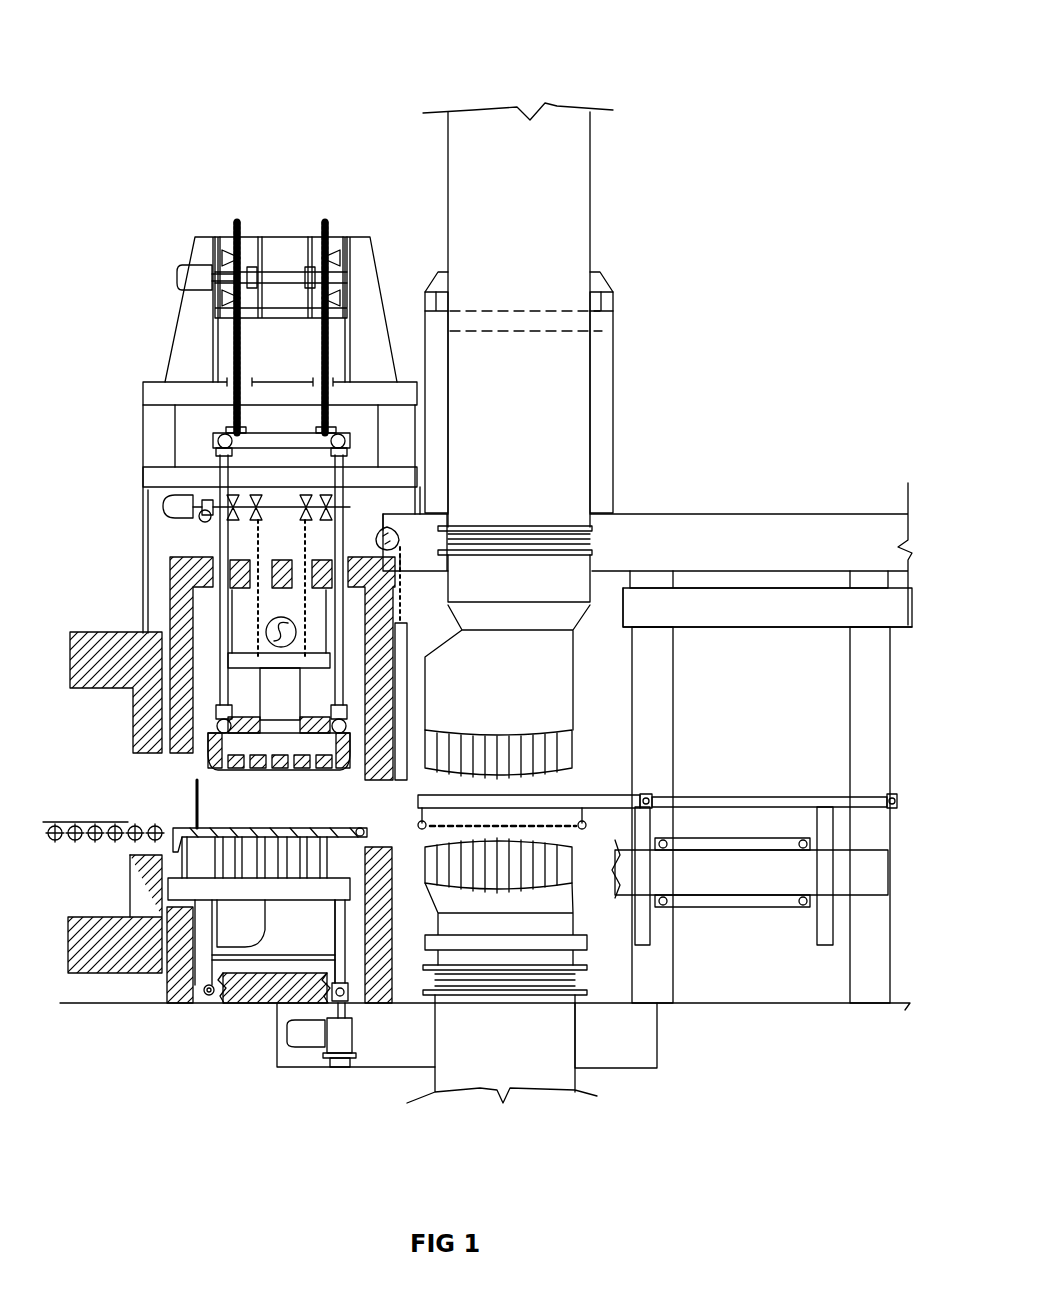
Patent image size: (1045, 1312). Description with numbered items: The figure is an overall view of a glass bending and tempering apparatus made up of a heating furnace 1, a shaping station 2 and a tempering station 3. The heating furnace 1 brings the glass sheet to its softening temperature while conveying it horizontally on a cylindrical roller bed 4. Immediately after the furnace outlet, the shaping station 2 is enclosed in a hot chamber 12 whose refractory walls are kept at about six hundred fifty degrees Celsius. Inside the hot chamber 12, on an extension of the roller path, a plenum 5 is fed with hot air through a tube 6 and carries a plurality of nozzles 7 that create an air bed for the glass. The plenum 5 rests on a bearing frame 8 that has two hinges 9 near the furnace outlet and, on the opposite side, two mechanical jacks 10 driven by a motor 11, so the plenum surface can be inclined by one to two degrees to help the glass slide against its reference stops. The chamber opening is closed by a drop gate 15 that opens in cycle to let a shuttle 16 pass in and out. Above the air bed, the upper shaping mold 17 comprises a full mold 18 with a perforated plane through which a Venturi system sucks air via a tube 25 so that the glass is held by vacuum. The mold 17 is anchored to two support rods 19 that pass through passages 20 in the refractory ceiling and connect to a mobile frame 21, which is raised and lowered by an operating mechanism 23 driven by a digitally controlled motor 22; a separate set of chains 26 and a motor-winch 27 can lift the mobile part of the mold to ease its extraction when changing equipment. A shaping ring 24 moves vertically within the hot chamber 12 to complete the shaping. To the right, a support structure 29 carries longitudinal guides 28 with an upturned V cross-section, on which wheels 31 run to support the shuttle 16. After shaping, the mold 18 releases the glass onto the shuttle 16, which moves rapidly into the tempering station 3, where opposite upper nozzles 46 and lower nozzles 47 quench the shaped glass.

The heating furnace 1 is at (100, 632).
The shaping station 2 is at (240, 212).
The tempering station 3 is at (547, 102).
The cylindrical roller bed 4 is at (115, 842).
The plenum 5 is at (318, 900).
The tube 6 is at (250, 937).
The nozzles 7 is at (173, 828).
The bearing frame 8 is at (340, 955).
The hinges 9 is at (208, 995).
The mechanical jacks 10 is at (348, 1003).
The motor 11 is at (312, 1040).
The hot chamber 12 is at (170, 565).
The drop gate 15 is at (405, 655).
The shuttle 16 is at (720, 800).
The upper shaping mold 17 is at (250, 693).
The full mold 18 is at (300, 772).
The support rods 19 is at (220, 665).
The passages 20 is at (210, 582).
The mobile frame 21 is at (272, 433).
The digitally controlled motor 22 is at (200, 282).
The operating mechanism 23 is at (320, 245).
The shaping ring 24 is at (375, 842).
The tube 25 is at (290, 622).
The chains 26 is at (305, 585).
The motor-winch 27 is at (165, 503).
The longitudinal guides 28 is at (880, 850).
The support structure 29 is at (673, 730).
The wheels 31 is at (802, 903).
The upper nozzles 46 is at (565, 752).
The lower nozzles 47 is at (560, 860).